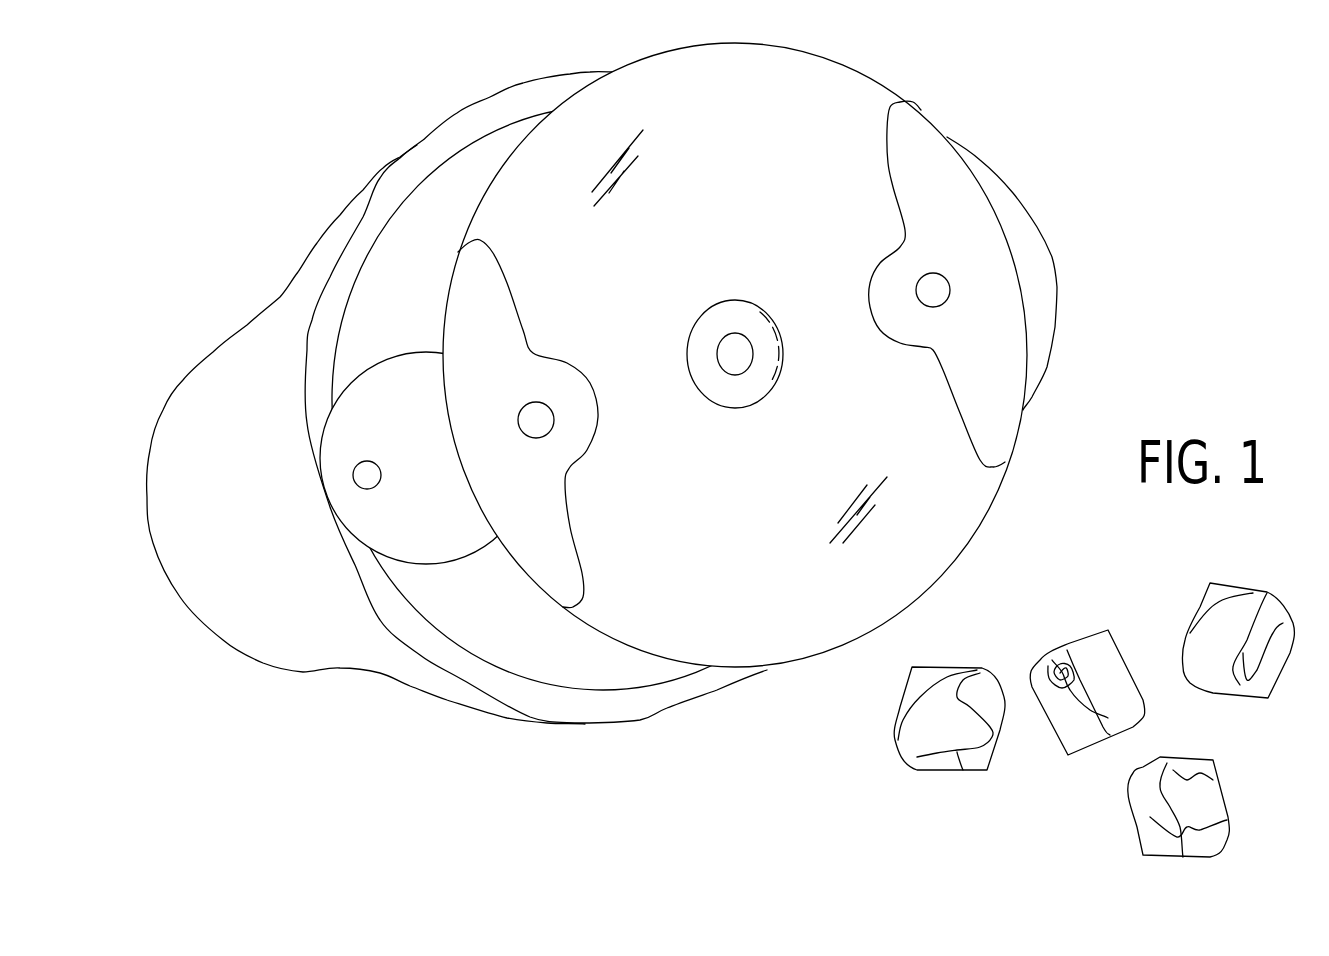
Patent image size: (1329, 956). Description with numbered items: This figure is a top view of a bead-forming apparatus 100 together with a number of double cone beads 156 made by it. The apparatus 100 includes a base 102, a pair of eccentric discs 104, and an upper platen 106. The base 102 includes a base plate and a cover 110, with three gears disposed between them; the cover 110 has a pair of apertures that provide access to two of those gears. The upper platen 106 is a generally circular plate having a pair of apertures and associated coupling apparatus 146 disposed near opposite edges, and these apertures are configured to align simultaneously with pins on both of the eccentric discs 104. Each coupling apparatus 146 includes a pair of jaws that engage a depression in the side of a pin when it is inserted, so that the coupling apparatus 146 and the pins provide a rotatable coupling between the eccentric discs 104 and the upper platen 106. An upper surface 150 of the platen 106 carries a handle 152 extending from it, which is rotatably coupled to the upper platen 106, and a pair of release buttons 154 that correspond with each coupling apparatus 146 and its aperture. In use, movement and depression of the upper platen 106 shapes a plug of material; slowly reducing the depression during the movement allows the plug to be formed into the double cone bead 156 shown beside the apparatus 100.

The apparatus 100 is at (180, 162).
The base 102 is at (262, 655).
The eccentric discs 104 is at (405, 355).
The upper platen 106 is at (817, 657).
The cover 110 is at (623, 672).
The coupling apparatus 146 is at (923, 125).
The upper surface 150 is at (822, 92).
The handle 152 is at (718, 313).
The release buttons 154 is at (935, 275).
The double cone bead 156 is at (1237, 585).